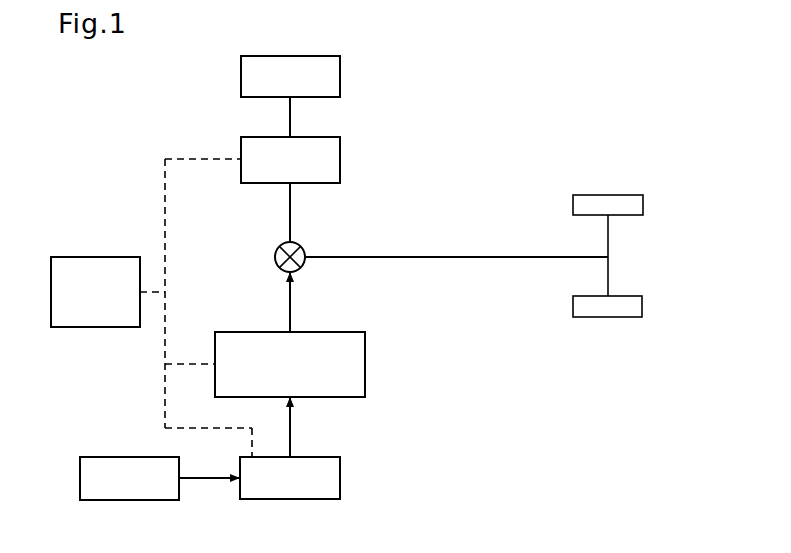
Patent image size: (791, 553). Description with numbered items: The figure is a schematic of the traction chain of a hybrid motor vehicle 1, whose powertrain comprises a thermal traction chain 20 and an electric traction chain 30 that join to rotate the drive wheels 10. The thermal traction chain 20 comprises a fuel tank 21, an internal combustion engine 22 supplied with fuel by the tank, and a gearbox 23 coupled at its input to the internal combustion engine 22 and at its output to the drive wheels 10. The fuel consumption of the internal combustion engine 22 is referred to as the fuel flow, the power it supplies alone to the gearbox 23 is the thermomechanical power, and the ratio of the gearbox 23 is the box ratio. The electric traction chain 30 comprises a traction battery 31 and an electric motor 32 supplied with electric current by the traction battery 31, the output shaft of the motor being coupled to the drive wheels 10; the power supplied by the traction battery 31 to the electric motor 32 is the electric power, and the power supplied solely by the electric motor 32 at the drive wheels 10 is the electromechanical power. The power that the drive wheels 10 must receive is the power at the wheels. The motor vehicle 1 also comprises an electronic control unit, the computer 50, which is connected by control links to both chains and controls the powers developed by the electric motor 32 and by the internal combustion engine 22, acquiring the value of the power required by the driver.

The motor vehicle 1 is at (504, 99).
The drive wheels 10 is at (620, 195).
The thermal traction chain 20 is at (336, 425).
The fuel tank 21 is at (129, 478).
The internal combustion engine 22 is at (290, 478).
The gearbox 23 is at (290, 364).
The electric traction chain 30 is at (321, 119).
The traction battery 31 is at (290, 76).
The electric motor 32 is at (290, 160).
The computer 50 is at (95, 292).